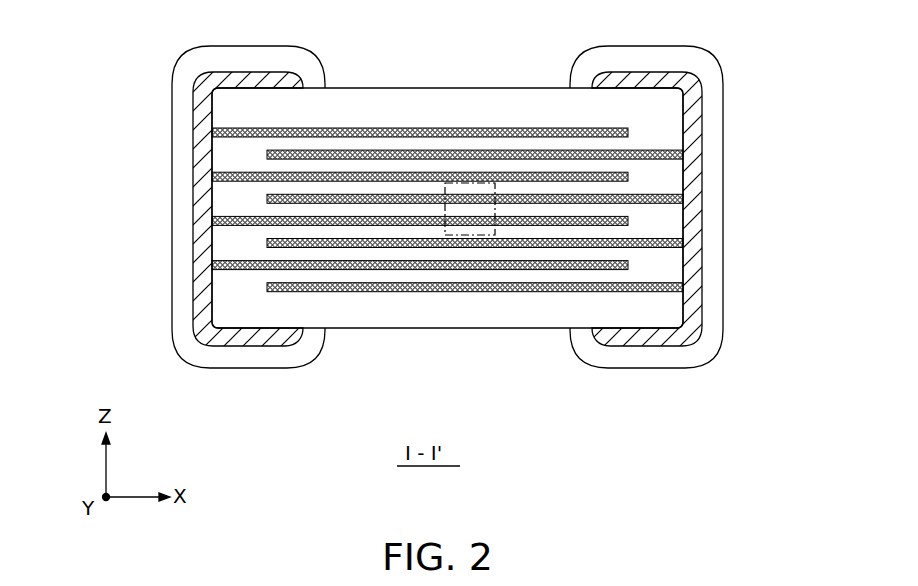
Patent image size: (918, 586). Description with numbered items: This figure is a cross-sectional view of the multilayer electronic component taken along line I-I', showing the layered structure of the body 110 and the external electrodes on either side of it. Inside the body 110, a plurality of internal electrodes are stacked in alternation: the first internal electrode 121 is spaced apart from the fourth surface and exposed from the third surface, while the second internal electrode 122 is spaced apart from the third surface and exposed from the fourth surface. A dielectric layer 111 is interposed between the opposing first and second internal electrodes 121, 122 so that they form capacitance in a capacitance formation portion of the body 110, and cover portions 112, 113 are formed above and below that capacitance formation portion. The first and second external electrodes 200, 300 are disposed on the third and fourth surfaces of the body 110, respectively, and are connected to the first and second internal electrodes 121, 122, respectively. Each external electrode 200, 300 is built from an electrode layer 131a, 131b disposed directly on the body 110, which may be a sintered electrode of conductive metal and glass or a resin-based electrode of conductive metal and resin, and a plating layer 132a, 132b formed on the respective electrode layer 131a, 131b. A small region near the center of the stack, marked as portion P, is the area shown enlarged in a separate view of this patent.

The body 110 is at (395, 87).
The dielectric layer 111 is at (338, 163).
The cover portion 112 is at (442, 102).
The cover portion 113 is at (420, 313).
The first internal electrode 121 is at (497, 128).
The second internal electrode 122 is at (542, 150).
The electrode layer 131a is at (195, 235).
The plating layer 132a is at (180, 152).
The electrode layer 131b is at (700, 233).
The plating layer 132b is at (717, 152).
The first external electrode 200 is at (173, 207).
The second external electrode 300 is at (723, 207).
The portion P is at (467, 235).